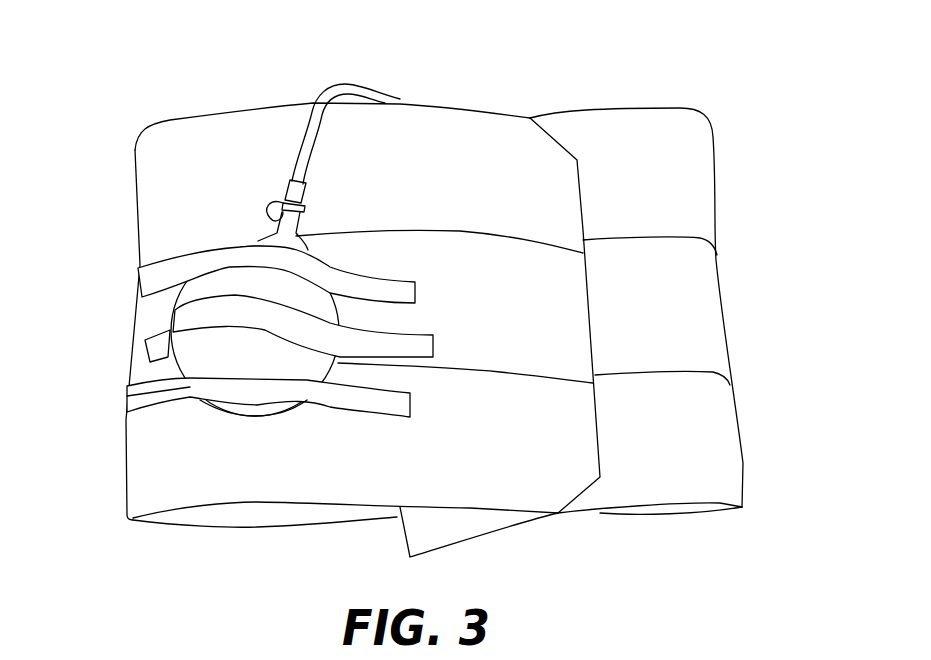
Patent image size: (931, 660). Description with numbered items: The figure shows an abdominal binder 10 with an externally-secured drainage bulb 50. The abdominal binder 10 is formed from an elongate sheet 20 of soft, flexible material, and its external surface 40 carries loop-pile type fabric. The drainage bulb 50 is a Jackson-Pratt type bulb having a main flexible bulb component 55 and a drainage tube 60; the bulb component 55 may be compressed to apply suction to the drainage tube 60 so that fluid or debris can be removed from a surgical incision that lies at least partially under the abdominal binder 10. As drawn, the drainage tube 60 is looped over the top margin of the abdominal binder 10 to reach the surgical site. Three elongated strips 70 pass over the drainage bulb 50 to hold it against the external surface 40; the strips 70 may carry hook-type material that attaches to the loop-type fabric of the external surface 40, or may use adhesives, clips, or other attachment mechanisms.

The abdominal binder 10 is at (776, 171).
The elongate sheet 20 is at (150, 195).
The external surface 40 is at (162, 480).
The drainage bulb 50 is at (247, 370).
The bulb component 55 is at (298, 407).
The drainage tube 60 is at (390, 98).
The strips 70 is at (150, 283).